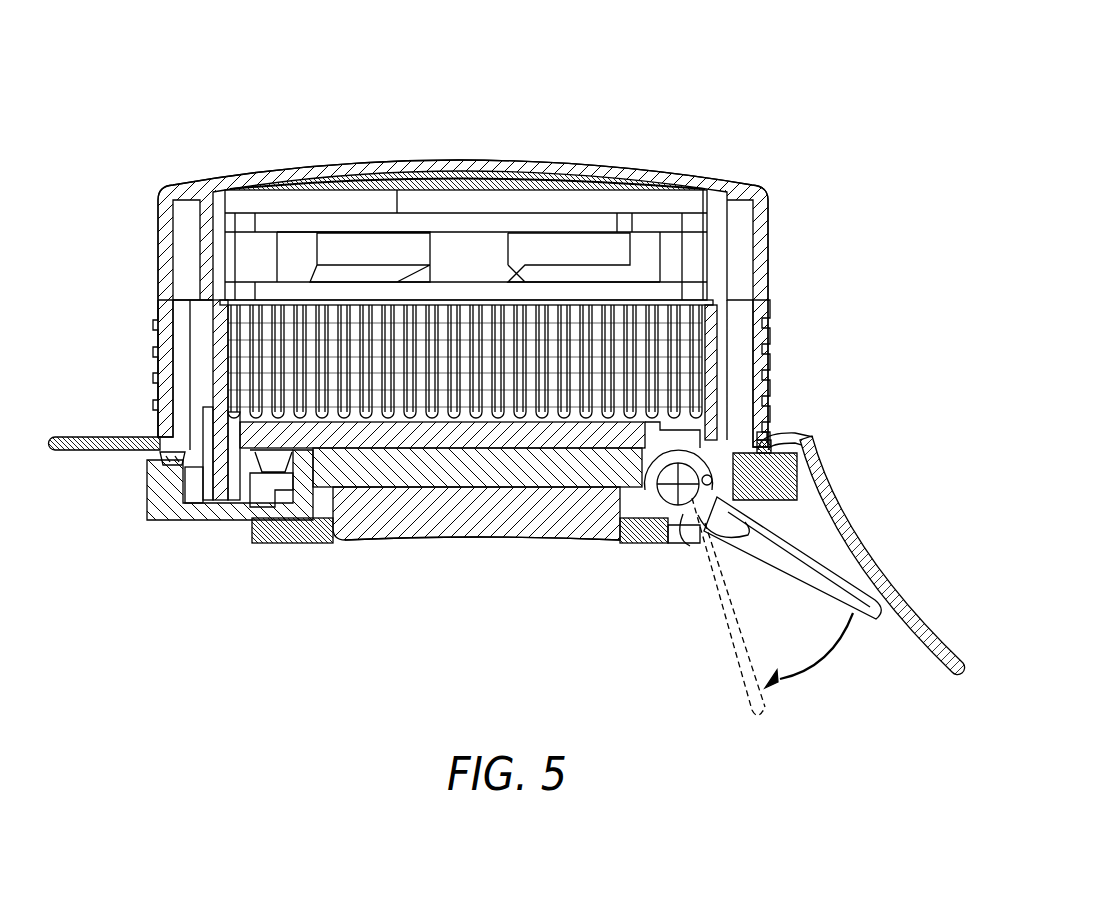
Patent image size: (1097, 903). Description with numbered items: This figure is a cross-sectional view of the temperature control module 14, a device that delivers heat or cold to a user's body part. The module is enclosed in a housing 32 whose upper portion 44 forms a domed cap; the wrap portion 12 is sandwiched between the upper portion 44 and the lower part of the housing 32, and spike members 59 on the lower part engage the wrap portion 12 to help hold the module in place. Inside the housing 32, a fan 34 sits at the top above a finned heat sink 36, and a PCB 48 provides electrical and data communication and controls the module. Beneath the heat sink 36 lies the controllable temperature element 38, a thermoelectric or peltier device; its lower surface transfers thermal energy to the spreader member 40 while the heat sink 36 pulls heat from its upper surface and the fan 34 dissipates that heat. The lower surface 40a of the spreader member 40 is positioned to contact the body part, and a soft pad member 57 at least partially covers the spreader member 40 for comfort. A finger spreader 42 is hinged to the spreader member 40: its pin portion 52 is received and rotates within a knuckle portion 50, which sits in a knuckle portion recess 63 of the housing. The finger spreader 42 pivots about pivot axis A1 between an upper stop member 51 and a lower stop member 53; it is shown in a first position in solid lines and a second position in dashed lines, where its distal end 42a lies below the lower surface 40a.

The temperature control module 14 is at (752, 58).
The upper portion 44 is at (596, 168).
The fan 34 is at (472, 252).
The heat sink 36 is at (673, 333).
The PCB 48 is at (216, 350).
The knuckle portion recess 63 is at (705, 390).
The controllable temperature element 38 is at (353, 482).
The spreader member 40 is at (427, 530).
The lower surface 40a is at (475, 540).
The pad member 57 is at (292, 544).
The housing 32 is at (160, 507).
The wrap portion 12 is at (89, 433).
The spike member 59 is at (157, 462).
The pin portion 52 is at (637, 547).
The pivot axis A1 is at (710, 445).
The knuckle portion 50 is at (703, 482).
The lower stop member 53 is at (693, 527).
The upper stop member 51 is at (742, 545).
The finger spreader 42 is at (853, 565).
The distal end 42a is at (853, 615).